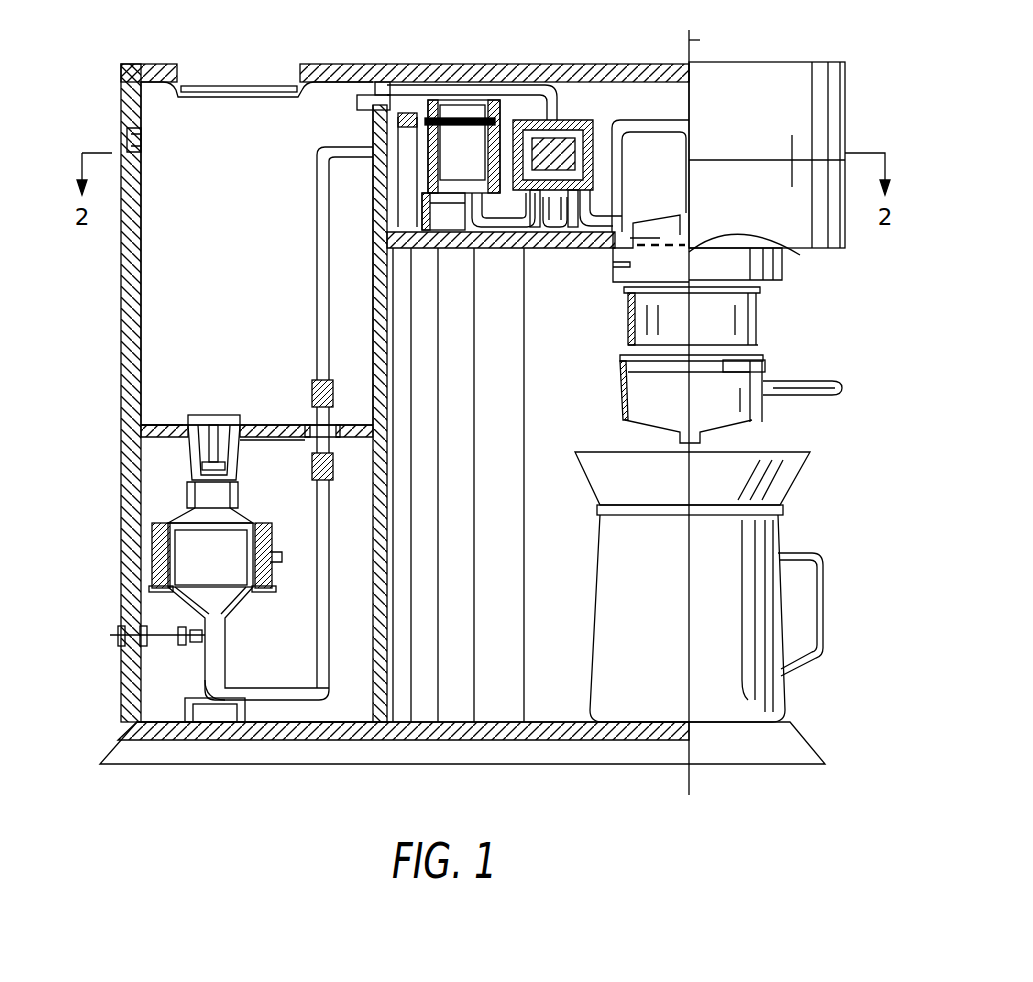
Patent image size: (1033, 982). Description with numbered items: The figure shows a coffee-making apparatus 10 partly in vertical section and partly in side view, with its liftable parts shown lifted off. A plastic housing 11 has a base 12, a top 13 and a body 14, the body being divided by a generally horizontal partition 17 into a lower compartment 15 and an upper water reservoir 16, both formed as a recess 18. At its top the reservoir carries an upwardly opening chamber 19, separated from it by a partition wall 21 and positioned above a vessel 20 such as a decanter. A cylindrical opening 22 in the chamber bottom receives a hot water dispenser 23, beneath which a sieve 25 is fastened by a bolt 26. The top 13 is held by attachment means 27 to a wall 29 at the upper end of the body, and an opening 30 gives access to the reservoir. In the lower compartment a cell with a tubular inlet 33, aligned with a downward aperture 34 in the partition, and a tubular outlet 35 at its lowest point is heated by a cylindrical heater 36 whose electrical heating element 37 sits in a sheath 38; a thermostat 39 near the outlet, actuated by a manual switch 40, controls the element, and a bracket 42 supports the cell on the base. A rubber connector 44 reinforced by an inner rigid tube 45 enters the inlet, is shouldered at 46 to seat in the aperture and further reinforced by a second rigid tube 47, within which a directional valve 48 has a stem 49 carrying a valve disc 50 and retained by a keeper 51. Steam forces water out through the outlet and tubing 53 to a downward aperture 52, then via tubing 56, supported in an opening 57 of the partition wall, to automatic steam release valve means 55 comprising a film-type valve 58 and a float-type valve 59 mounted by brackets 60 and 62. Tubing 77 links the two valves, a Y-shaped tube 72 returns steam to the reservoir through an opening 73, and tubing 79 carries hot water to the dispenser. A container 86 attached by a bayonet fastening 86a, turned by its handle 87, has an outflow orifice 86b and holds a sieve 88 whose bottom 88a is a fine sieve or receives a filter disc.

The coffee maker 10 is at (728, 49).
The plastic housing 11 is at (110, 297).
The base 12 is at (298, 778).
The top 13 is at (318, 70).
The body 14 is at (121, 335).
The lower compartment 15 is at (156, 722).
The upper water reservoir 16 is at (146, 236).
The partition 17 is at (150, 425).
The recess 18 is at (532, 458).
The chamber 19 is at (616, 99).
The vessel 20 is at (668, 616).
The partition wall 21 is at (375, 215).
The cylindrical opening 22 is at (620, 272).
The hot water dispenser 23 is at (660, 222).
The sieve 25 is at (700, 265).
The bolt 26 is at (745, 237).
The attachment means 27 is at (125, 152).
The wall 29 is at (133, 135).
The opening 30 is at (205, 85).
The tubular inlet 33 is at (170, 516).
The downward aperture 34 is at (145, 433).
The tubular outlet 35 is at (225, 640).
The heater 36 is at (156, 597).
The electrical heating element 37 is at (150, 612).
The sheath 38 is at (152, 555).
The thermostat 39 is at (165, 680).
The manual switch 40 is at (118, 640).
The bracket 42 is at (205, 722).
The connector 44 is at (186, 492).
The inner rigid tube 45 is at (235, 520).
The shoulder 46 is at (187, 425).
The inner rigid tube 47 is at (228, 425).
The directional valve 48 is at (256, 436).
The stem 49 is at (208, 428).
The valve disc 50 is at (228, 466).
The keeper 51 is at (216, 415).
The downward aperture 52 is at (330, 455).
The tubing 53 is at (330, 600).
The automatic steam release valve means 55 is at (518, 115).
The tubing 56 is at (328, 285).
The opening 57 is at (375, 172).
The film-type automatic steam release valve 58 is at (445, 105).
The float-type automatic steam release valve 59 is at (571, 99).
The bracket 60 is at (455, 220).
The bracket 62 is at (570, 240).
The Y-shaped tube 72 is at (365, 95).
The opening 73 is at (378, 110).
The tubing 77 is at (552, 232).
The tubing 79 is at (650, 125).
The container 86 is at (770, 410).
The bayonet fastening 86a is at (766, 372).
The outflow orifice 86b is at (782, 470).
The handle 87 is at (820, 397).
The sieve 88 is at (760, 330).
The bottom 88a is at (765, 320).